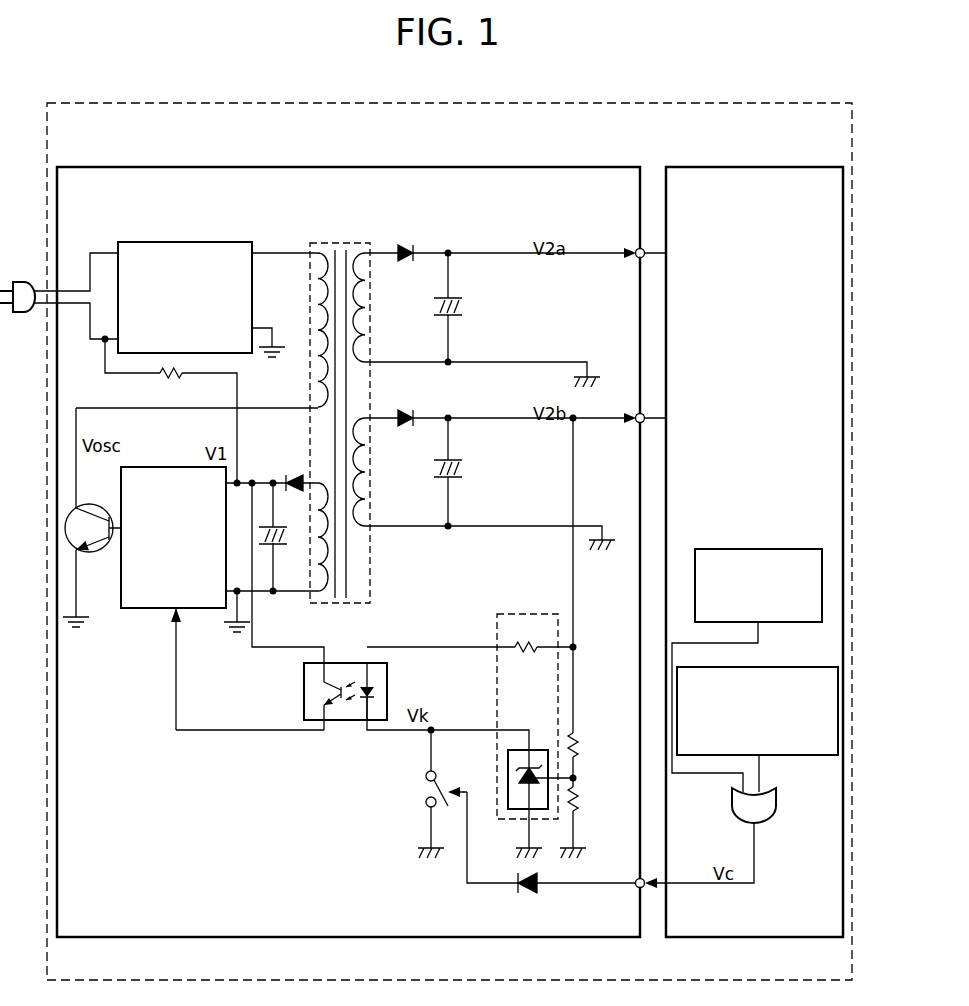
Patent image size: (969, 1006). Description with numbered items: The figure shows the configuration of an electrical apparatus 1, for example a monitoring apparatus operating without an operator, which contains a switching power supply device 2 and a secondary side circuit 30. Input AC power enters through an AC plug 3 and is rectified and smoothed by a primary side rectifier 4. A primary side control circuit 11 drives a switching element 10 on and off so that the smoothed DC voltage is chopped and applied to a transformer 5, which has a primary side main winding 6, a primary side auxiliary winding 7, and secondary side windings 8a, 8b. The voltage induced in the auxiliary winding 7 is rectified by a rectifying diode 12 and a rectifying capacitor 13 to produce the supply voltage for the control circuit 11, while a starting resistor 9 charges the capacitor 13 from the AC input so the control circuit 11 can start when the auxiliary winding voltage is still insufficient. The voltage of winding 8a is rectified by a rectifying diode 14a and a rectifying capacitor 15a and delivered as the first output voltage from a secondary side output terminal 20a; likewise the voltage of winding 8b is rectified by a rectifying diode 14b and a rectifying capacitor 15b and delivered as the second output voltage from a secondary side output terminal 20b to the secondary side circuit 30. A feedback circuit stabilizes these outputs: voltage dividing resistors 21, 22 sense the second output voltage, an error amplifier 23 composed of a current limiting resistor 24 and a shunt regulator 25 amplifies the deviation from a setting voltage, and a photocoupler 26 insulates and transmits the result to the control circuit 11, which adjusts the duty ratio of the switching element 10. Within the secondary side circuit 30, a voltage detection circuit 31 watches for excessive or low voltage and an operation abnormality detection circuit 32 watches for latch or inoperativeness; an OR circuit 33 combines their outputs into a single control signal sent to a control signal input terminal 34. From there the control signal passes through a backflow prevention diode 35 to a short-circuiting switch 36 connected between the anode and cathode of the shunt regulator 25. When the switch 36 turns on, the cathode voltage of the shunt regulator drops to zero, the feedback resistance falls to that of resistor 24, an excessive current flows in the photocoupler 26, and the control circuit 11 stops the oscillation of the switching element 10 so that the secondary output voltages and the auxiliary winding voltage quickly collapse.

The electrical apparatus 1 is at (590, 104).
The switching power supply device 2 is at (362, 168).
The AC plug 3 is at (22, 281).
The primary side rectifier 4 is at (137, 243).
The transformer 5 is at (337, 243).
The primary side main winding 6 is at (318, 327).
The primary side auxiliary winding 7 is at (318, 480).
The secondary side winding 8a is at (363, 317).
The secondary side winding 8b is at (365, 470).
The starting resistor 9 is at (172, 378).
The switching element 10 is at (65, 507).
The primary side control circuit 11 is at (176, 467).
The rectifying diode 12 is at (286, 477).
The rectifying capacitor 13 is at (276, 546).
The rectifying diode 14a is at (400, 250).
The rectifying diode 14b is at (400, 415).
The rectifying capacitor 15a is at (460, 298).
The rectifying capacitor 15b is at (462, 460).
The secondary side output terminal 20a is at (637, 249).
The secondary side output terminal 20b is at (637, 414).
The voltage dividing resistor 21 is at (575, 742).
The voltage dividing resistor 22 is at (575, 806).
The error amplifier 23 is at (520, 614).
The current limiting resistor 24 is at (517, 645).
The shunt regulator 25 is at (508, 752).
The photocoupler 26 is at (304, 697).
The secondary side circuit 30 is at (748, 167).
The voltage detection circuit 31 is at (757, 549).
The operation abnormality detection circuit 32 is at (765, 667).
The OR circuit 33 is at (768, 822).
The control signal input terminal 34 is at (636, 878).
The backflow prevention diode 35 is at (515, 893).
The short-circuiting switch 36 is at (425, 790).